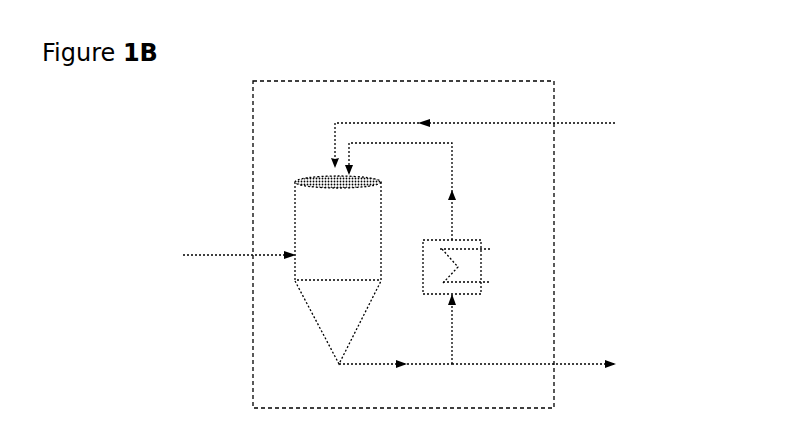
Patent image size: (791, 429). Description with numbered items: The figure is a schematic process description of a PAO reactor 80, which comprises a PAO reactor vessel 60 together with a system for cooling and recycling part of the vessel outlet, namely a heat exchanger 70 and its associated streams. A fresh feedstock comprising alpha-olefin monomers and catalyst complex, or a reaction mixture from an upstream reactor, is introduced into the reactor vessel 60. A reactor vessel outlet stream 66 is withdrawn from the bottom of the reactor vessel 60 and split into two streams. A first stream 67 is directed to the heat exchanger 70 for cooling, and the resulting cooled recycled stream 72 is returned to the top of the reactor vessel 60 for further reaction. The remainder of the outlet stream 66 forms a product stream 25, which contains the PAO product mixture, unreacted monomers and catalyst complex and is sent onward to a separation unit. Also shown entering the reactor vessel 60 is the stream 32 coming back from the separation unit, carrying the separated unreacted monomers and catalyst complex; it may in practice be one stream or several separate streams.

The PAO reactor 80 is at (531, 104).
The stream from the separation unit 32 is at (473, 128).
The cooled recycled stream 72 is at (417, 191).
The PAO reactor vessel 60 is at (338, 270).
The heat exchanger 70 is at (466, 241).
The first stream 67 is at (470, 329).
The reactor vessel outlet stream 66 is at (395, 379).
The product stream 25 is at (534, 379).